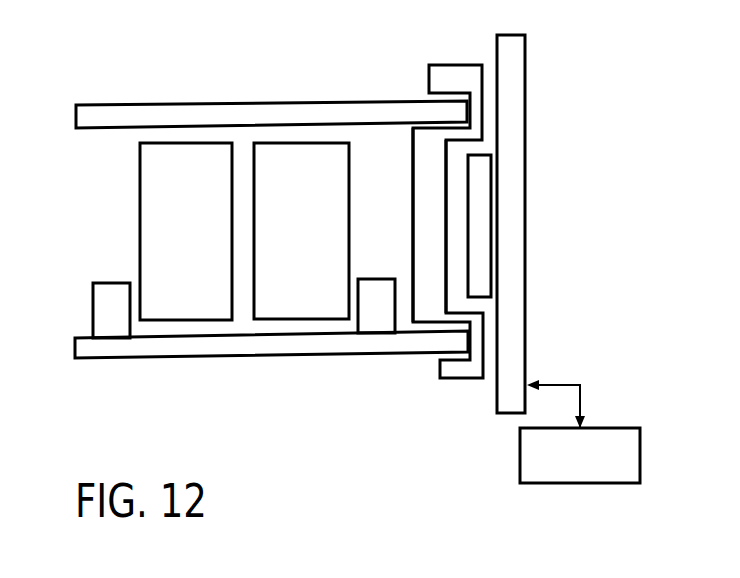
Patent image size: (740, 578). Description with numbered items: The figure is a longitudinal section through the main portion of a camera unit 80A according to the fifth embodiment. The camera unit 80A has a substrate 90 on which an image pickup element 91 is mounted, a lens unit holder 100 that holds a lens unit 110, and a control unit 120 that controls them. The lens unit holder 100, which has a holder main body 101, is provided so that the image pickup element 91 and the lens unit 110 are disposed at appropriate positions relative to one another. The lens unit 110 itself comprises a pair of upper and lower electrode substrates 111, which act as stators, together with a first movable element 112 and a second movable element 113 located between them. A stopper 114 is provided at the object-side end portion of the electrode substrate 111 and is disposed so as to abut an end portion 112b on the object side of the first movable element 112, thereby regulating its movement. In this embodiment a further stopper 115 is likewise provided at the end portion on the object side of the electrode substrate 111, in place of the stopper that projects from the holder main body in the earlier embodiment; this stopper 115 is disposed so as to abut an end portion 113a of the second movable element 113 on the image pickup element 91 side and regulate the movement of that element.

The camera unit 80A is at (560, 243).
The substrate 90 is at (505, 35).
The image pickup element 91 is at (467, 222).
The lens unit holder 100 is at (453, 65).
The holder main body 101 is at (436, 160).
The lens unit 110 is at (367, 411).
The electrode substrates (stators) 111 is at (108, 115).
The first movable element 112 is at (195, 142).
The end portion of the first movable element 112b is at (140, 228).
The second movable element 113 is at (295, 142).
The end portion of the second movable element 113a is at (350, 158).
The stopper 114 is at (93, 312).
The stopper 115 is at (384, 325).
The control unit 120 is at (519, 458).